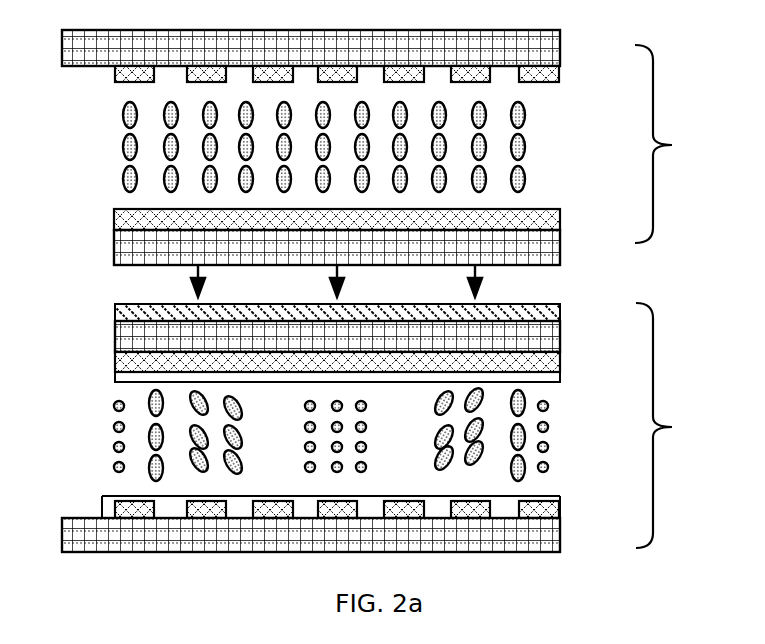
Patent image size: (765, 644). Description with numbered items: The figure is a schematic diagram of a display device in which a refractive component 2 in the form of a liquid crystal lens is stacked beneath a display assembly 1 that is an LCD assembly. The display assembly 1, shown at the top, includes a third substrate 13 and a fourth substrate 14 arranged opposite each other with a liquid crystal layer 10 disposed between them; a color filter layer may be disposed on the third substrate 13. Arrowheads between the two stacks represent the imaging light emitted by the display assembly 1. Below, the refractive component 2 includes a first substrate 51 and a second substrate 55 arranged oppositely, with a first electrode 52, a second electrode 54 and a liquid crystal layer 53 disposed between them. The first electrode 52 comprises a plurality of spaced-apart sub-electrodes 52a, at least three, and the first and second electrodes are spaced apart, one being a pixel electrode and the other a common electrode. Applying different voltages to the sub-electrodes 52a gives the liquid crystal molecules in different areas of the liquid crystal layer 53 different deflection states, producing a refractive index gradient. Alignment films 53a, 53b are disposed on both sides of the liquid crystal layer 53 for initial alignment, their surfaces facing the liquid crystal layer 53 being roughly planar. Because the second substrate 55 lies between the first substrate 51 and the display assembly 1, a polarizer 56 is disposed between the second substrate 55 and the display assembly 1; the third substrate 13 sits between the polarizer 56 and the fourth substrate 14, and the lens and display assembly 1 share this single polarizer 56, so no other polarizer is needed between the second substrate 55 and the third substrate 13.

The display assembly 1 is at (666, 144).
The refractive component 2 is at (667, 425).
The liquid crystal layer 10 is at (553, 152).
The third substrate 13 is at (560, 246).
The fourth substrate 14 is at (560, 48).
The first substrate 51 is at (560, 534).
The first electrode 52 is at (560, 509).
The sub-electrodes 52a is at (142, 510).
The liquid crystal layer 53 is at (553, 432).
The alignment film 53a is at (540, 485).
The alignment film 53b is at (545, 378).
The second electrode 54 is at (560, 363).
The second substrate 55 is at (560, 337).
The polarizer 56 is at (560, 314).